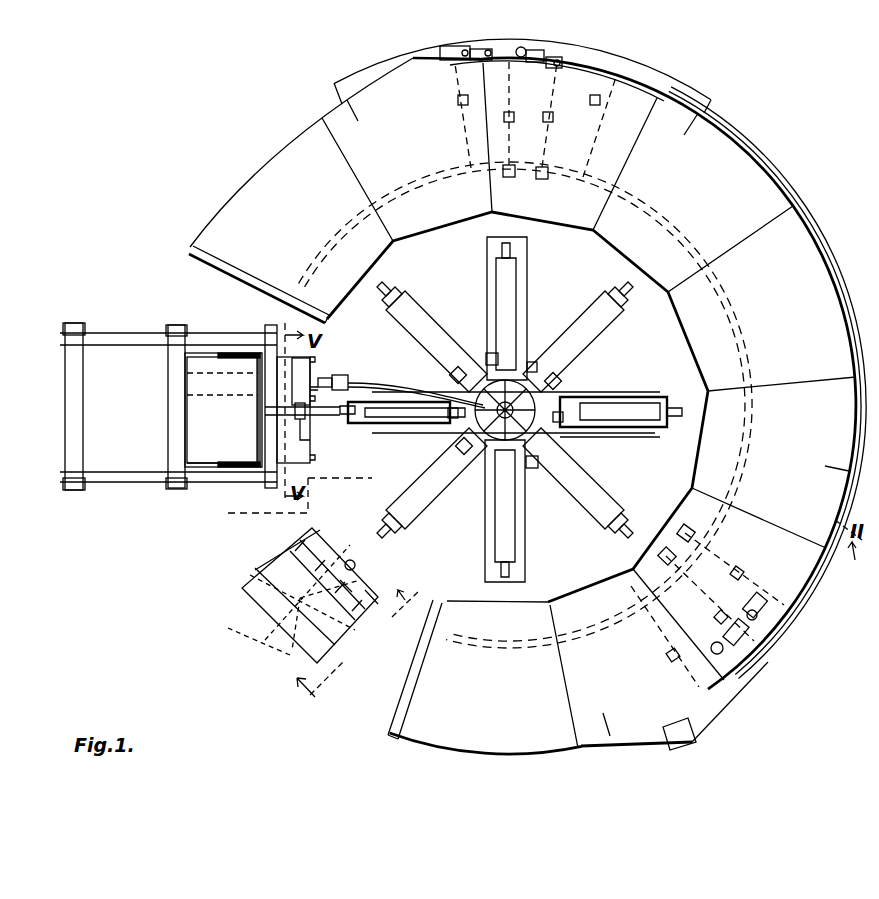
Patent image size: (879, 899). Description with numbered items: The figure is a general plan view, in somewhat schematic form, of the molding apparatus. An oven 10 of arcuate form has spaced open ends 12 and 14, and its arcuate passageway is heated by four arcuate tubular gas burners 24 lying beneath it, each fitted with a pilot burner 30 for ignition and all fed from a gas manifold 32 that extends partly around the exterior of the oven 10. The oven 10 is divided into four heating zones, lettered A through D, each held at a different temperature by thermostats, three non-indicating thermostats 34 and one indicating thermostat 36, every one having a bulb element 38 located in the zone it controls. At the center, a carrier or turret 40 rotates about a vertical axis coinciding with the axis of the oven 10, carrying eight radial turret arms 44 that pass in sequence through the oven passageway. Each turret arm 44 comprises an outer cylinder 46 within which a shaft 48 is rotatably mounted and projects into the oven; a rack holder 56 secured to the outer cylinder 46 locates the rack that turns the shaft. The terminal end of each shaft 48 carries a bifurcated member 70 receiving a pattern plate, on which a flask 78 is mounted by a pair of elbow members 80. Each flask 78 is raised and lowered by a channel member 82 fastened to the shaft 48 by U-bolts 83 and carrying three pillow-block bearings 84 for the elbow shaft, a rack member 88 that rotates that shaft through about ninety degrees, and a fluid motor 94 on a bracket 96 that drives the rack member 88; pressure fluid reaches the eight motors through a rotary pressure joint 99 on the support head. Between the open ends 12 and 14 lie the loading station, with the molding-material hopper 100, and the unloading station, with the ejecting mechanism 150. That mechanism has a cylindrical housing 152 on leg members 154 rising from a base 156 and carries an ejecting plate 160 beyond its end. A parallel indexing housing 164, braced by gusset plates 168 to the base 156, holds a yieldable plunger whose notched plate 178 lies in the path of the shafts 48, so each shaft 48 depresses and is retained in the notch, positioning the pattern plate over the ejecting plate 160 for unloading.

The oven 10 is at (248, 198).
The open end 12 is at (200, 255).
The open end 14 is at (396, 678).
The gas burner 24 is at (443, 190).
The pilot burner 30 is at (468, 170).
The manifold 32 is at (843, 278).
The thermostat 34 is at (495, 50).
The thermostat 36 is at (683, 746).
The bulb element 38 is at (358, 120).
The carrier or turret 40 is at (648, 350).
The turret arm 44 is at (498, 278).
The outer cylinder 46 is at (478, 300).
The shaft 48 is at (630, 250).
The rack holder 56 is at (490, 352).
The bifurcated member 70 is at (178, 320).
The flask 78 is at (198, 467).
The elbow member 80 is at (225, 353).
The channel member 82 is at (310, 362).
The U-bolt 83 is at (305, 419).
The pillow-block bearing 84 is at (312, 457).
The rack member 88 is at (308, 372).
The fluid motor 94 is at (340, 377).
The bracket 96 is at (356, 383).
The rotary pressure joint 99 is at (598, 438).
The hopper 100 is at (109, 308).
The ejecting mechanism 150 is at (238, 631).
The cylindrical housing 152 is at (268, 593).
The leg member 154 is at (290, 660).
The base 156 is at (366, 606).
The ejecting plate 160 is at (262, 580).
The cylindrical housing 164 is at (350, 560).
The gusset plate 168 is at (330, 480).
The notched plate 178 is at (358, 580).